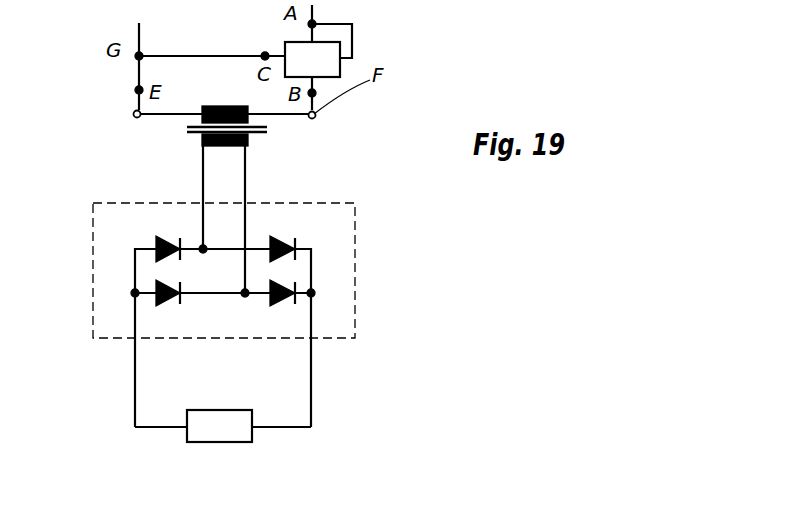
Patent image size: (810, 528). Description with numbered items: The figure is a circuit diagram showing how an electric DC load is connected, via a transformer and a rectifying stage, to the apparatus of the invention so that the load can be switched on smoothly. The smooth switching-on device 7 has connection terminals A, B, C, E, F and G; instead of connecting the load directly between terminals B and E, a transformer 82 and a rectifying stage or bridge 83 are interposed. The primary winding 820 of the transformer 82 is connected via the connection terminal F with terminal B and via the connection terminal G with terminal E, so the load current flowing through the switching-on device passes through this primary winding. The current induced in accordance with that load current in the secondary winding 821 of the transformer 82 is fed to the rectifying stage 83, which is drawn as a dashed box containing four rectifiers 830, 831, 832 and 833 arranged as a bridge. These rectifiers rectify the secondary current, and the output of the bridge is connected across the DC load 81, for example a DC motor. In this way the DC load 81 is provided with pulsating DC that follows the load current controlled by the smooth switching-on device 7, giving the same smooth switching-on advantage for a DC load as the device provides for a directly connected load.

The smooth switching-on device 7 is at (336, 70).
The transformer 82 is at (236, 131).
The primary winding 820 is at (237, 83).
The secondary winding 821 is at (203, 140).
The rectifying stage or bridge 83 is at (338, 315).
The rectifier 830 is at (293, 252).
The rectifier 831 is at (158, 303).
The rectifier 832 is at (297, 295).
The rectifier 833 is at (157, 256).
The DC load 81 is at (237, 435).